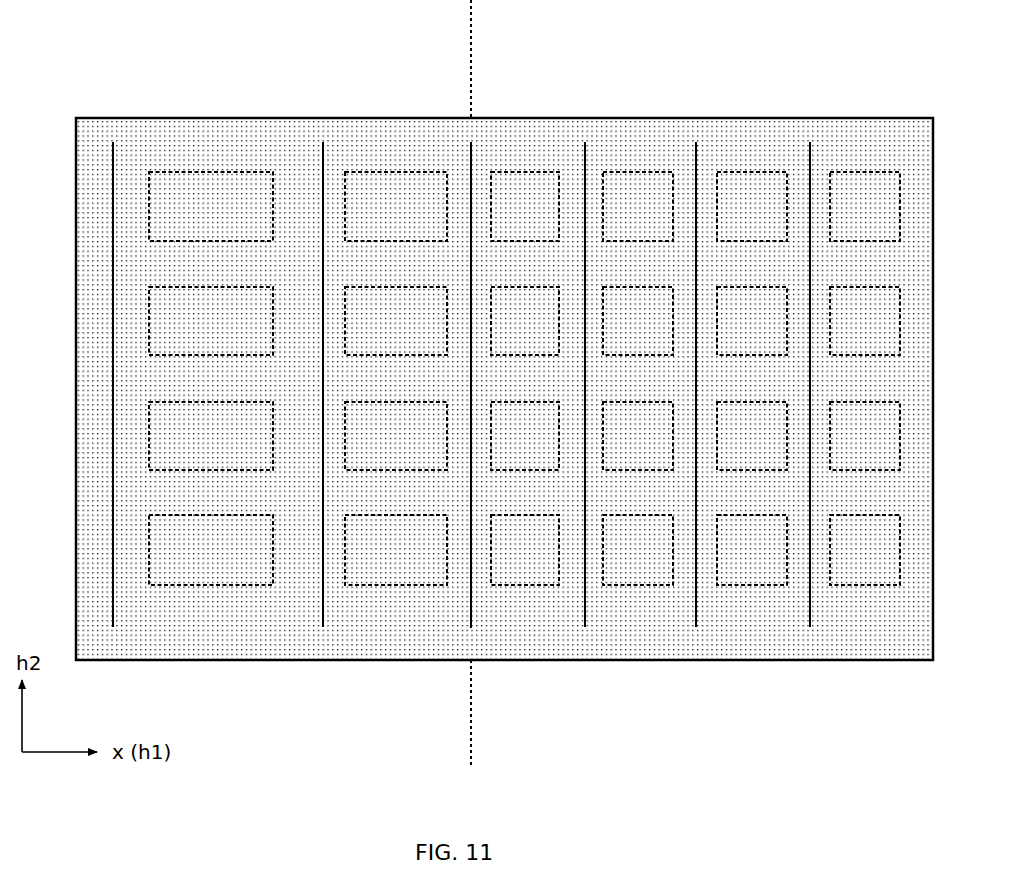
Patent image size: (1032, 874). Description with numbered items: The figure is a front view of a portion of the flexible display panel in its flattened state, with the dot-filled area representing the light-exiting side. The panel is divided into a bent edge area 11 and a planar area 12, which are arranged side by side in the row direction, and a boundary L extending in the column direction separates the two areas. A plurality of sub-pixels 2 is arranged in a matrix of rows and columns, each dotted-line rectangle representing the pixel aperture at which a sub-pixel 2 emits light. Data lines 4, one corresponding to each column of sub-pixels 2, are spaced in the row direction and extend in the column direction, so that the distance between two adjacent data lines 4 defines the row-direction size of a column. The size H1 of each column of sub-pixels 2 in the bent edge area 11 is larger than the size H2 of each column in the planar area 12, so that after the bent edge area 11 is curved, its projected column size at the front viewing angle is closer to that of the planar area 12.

The sub-pixel 2 is at (166, 172).
The data line 4 is at (112, 175).
The boundary L is at (471, 88).
The bent edge area 11 is at (471, 14).
The planar area 12 is at (471, 51).
The size of each column of sub-pixels in the bent edge area H1 is at (322, 381).
The size of each column of sub-pixels in the planar area H2 is at (584, 381).